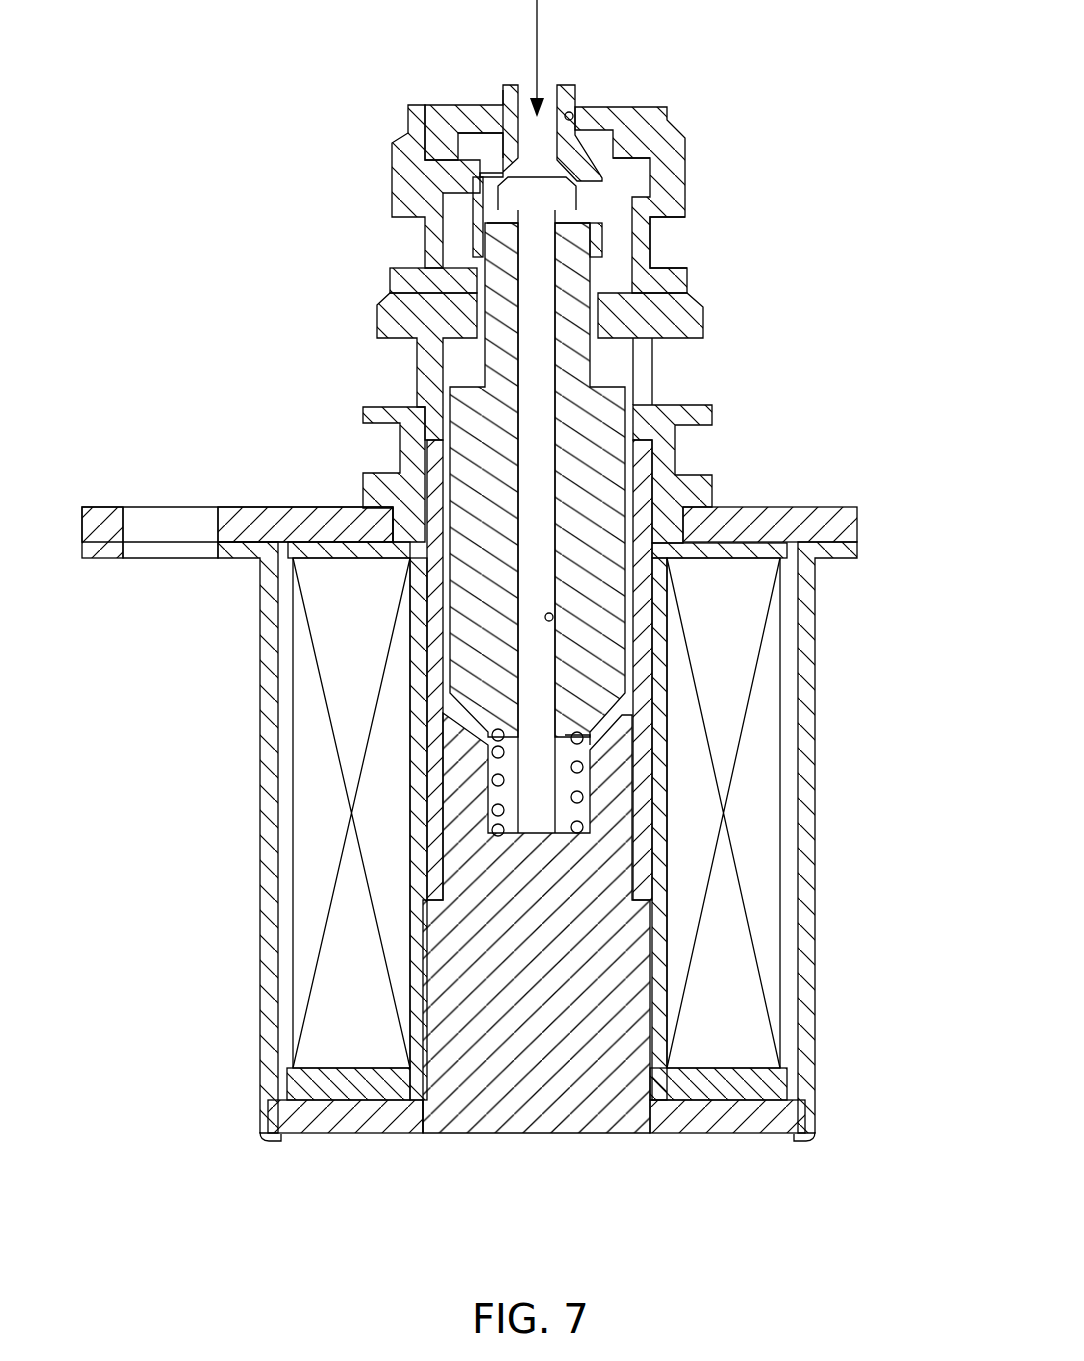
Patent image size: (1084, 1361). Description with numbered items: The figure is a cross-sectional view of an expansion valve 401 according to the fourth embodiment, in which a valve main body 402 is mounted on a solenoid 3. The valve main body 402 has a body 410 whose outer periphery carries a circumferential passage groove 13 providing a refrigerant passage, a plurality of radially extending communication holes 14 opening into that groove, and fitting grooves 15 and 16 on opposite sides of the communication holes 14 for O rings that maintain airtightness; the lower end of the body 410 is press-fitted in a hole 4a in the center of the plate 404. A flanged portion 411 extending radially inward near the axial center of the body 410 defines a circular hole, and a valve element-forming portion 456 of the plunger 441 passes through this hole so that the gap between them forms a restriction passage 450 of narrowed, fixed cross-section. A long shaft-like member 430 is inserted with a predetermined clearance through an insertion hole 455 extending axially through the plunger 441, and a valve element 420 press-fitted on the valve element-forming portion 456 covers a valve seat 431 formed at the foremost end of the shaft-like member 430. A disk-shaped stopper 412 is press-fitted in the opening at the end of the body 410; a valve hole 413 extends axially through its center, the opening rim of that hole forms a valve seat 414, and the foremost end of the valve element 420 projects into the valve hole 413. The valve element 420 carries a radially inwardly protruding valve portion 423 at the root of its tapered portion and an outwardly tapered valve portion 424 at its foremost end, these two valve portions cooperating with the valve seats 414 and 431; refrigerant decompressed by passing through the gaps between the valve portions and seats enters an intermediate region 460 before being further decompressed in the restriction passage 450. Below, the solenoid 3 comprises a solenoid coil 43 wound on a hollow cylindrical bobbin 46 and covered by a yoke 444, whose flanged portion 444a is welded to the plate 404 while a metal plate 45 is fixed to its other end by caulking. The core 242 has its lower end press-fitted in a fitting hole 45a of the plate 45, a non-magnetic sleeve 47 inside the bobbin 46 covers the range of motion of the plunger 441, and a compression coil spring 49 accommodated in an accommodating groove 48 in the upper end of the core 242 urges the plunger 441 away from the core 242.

The expansion valve 401 is at (790, 228).
The valve main body 402 is at (667, 104).
The valve hole 413 is at (578, 103).
The stopper 412 is at (440, 105).
The valve seat 414 is at (500, 105).
The valve portion 424 is at (500, 103).
The body 410 is at (398, 177).
The valve seat 431 is at (478, 185).
The valve element 420 is at (476, 222).
The valve portion 423 is at (600, 165).
The intermediate region 460 is at (618, 188).
The fitting groove 15 is at (673, 228).
The valve element-forming portion 456 is at (490, 275).
The plunger 441 is at (465, 665).
The flanged portion 411 is at (430, 292).
The passage groove 13 is at (400, 340).
The restriction passage 450 is at (600, 320).
The communication holes 14 is at (697, 372).
The shaft-like member 430 is at (527, 430).
The plate 404 is at (262, 505).
The fitting groove 16 is at (688, 427).
The hole 4a is at (395, 522).
The flanged portion 444a is at (105, 552).
The yoke 444 is at (270, 907).
The solenoid coil 43 is at (312, 775).
The solenoid 3 is at (815, 717).
The sleeve 47 is at (435, 828).
The accommodating groove 48 is at (582, 768).
The compression coil spring 49 is at (584, 797).
The insertion hole 455 is at (555, 617).
The core 242 is at (600, 1100).
The bobbin 46 is at (300, 1082).
The plate 45 is at (348, 1125).
The fitting hole 45a is at (430, 1135).